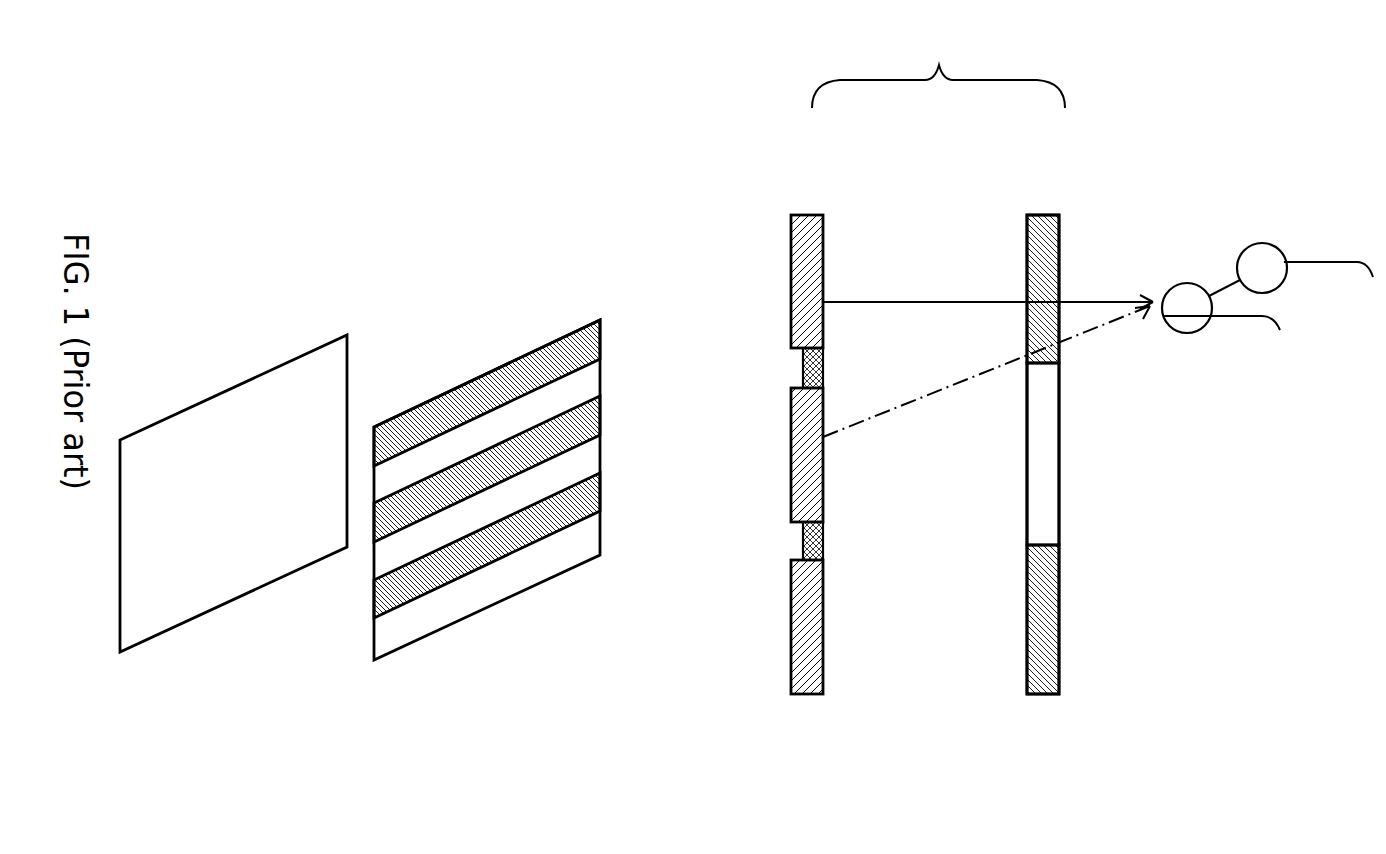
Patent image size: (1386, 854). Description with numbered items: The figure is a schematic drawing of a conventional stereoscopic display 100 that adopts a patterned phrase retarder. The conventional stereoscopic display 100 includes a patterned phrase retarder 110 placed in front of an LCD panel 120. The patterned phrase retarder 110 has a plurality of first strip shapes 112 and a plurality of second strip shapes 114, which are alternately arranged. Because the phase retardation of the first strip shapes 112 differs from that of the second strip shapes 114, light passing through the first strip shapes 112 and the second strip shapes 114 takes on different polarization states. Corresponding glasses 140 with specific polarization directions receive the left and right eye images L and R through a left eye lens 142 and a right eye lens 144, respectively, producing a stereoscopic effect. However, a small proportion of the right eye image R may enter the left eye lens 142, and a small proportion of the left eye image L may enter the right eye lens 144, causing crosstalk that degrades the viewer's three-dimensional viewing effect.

The conventional stereoscopic display 100 is at (938, 68).
The patterned phrase retarder 110 is at (558, 340).
The first strip shape 112 is at (583, 355).
The second strip shape 114 is at (583, 456).
The LCD panel 120 is at (315, 351).
The glasses 140 is at (1267, 297).
The left eye lens 142 is at (1190, 323).
The right eye lens 144 is at (1277, 277).